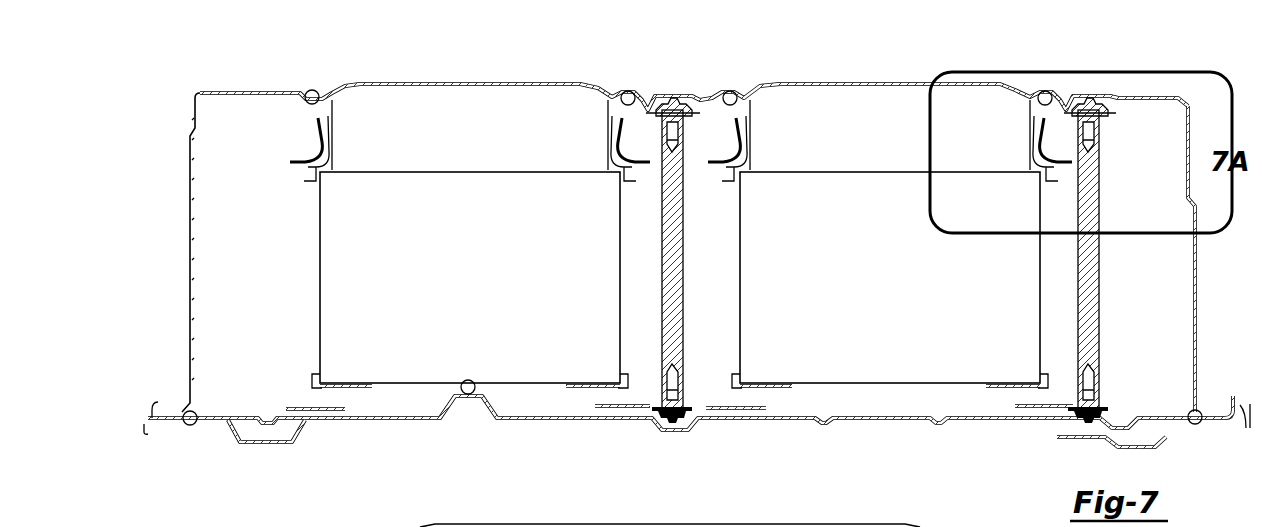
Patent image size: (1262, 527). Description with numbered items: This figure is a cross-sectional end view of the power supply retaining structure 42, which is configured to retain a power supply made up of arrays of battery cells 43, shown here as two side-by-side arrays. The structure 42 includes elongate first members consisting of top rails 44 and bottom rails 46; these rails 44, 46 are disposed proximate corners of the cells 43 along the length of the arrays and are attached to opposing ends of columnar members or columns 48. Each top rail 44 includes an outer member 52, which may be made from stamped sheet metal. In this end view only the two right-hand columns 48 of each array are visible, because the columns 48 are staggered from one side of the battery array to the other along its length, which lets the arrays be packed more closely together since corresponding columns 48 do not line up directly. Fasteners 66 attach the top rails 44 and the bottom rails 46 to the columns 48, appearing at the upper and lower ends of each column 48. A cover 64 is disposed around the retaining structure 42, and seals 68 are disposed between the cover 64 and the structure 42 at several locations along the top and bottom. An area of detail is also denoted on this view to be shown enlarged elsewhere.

The power supply retaining structure 42 is at (428, 66).
The battery cells 43 is at (480, 293).
The top rails 44 is at (652, 98).
The bottom rails 46 is at (363, 412).
The columns 48 is at (688, 316).
The outer member 52 is at (560, 524).
The cover 64 is at (238, 92).
The fasteners 66 is at (681, 98).
The seals 68 is at (312, 90).